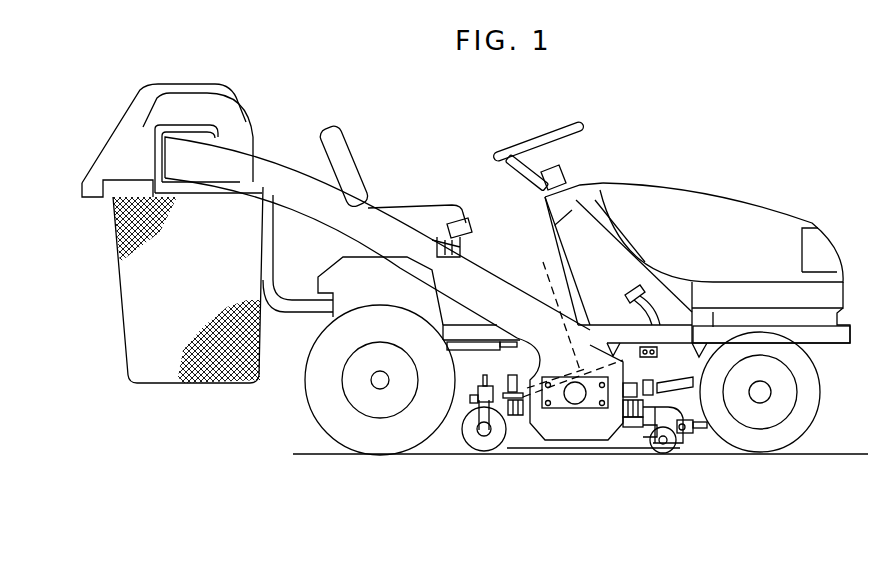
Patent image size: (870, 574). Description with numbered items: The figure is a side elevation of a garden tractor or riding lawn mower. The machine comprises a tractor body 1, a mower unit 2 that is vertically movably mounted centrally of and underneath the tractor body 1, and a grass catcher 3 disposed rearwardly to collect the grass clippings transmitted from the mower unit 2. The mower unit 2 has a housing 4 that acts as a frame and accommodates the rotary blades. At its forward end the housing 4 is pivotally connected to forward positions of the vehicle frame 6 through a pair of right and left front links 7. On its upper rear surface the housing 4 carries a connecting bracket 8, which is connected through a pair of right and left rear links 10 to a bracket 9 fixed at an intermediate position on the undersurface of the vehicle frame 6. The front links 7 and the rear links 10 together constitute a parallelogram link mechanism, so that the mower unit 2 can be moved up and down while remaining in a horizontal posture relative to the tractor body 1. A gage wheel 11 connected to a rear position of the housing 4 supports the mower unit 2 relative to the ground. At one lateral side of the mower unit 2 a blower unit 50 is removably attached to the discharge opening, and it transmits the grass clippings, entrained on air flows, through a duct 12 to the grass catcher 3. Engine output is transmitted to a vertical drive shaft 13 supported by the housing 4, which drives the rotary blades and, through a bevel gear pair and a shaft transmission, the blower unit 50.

The tractor body 1 is at (838, 338).
The mower unit 2 is at (607, 451).
The grass catcher 3 is at (125, 343).
The housing 4 is at (637, 435).
The vehicle frame 6 is at (708, 343).
The front links 7 is at (700, 425).
The connecting bracket 8 is at (514, 375).
The bracket 9 is at (620, 350).
The rear links 10 is at (573, 320).
The gage wheel 11 is at (475, 442).
The duct 12 is at (372, 208).
The vertical drive shaft 13 is at (665, 380).
The blower unit 50 is at (537, 437).